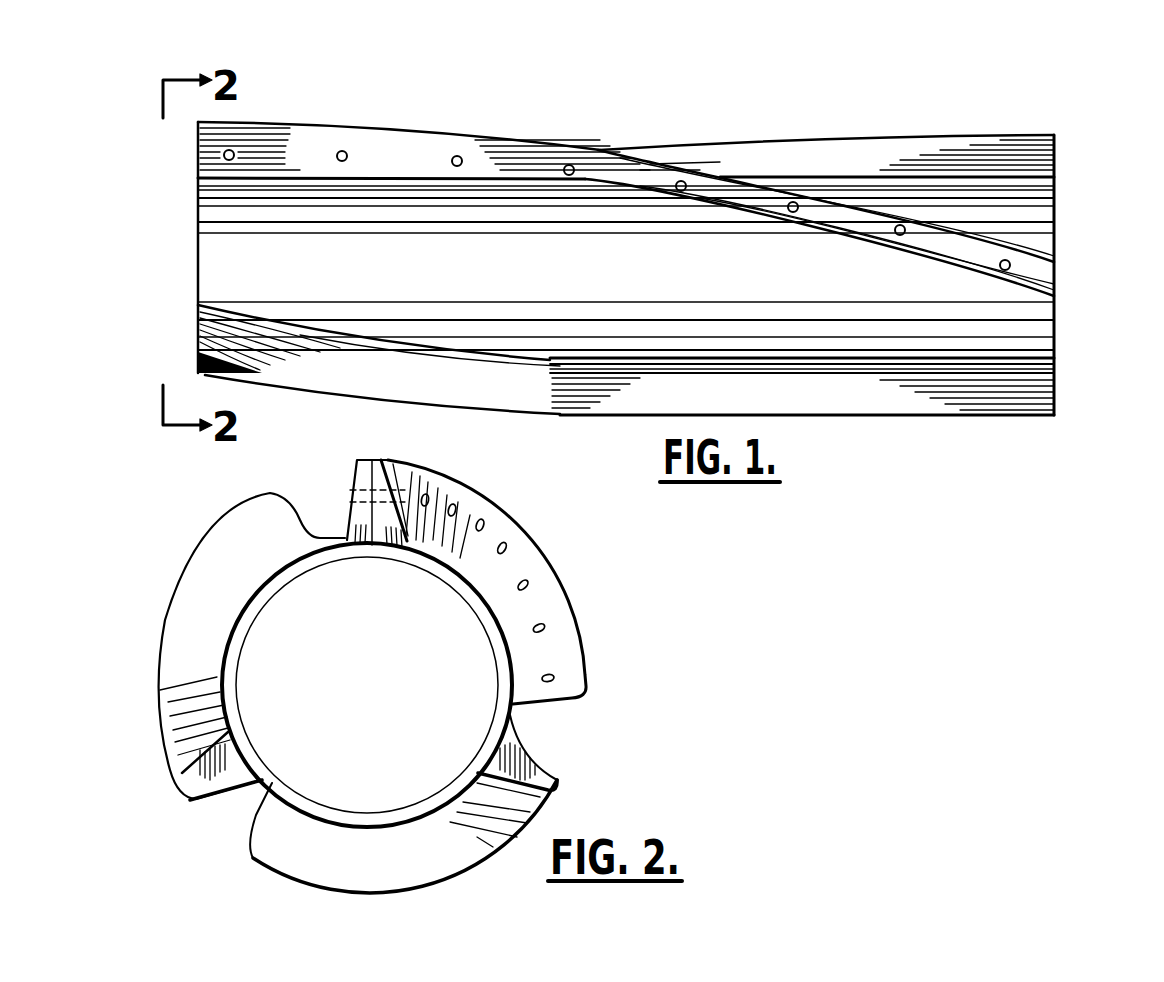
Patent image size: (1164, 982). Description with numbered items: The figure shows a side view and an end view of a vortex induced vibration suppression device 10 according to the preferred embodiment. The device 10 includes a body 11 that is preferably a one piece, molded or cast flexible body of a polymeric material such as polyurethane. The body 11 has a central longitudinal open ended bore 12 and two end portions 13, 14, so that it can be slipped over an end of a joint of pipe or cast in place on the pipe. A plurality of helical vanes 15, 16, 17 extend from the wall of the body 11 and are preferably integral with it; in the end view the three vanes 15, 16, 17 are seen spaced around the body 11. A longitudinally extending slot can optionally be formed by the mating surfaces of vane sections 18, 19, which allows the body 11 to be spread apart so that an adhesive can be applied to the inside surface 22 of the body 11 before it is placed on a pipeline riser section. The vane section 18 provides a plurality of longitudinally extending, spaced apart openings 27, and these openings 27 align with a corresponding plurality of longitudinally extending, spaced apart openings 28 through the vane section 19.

In FIG. 1, the vortex induced vibration suppression device 10 is at (623, 232).
In FIG. 1, the body 11 is at (428, 278).
In FIG. 2, the body 11 is at (262, 782).
In FIG. 2, the central longitudinal open ended bore 12 is at (293, 730).
In FIG. 1, the end portion 13 is at (197, 320).
In FIG. 1, the end portion 14 is at (1060, 345).
In FIG. 2, the helical vane 15 is at (187, 622).
In FIG. 2, the helical vane 16 is at (560, 778).
In FIG. 1, the helical vane 17 is at (373, 143).
In FIG. 2, the helical vane 17 is at (364, 460).
In FIG. 1, the vane section 18 is at (640, 150).
In FIG. 2, the vane section 18 is at (353, 482).
In FIG. 1, the vane section 19 is at (637, 178).
In FIG. 2, the vane section 19 is at (548, 583).
In FIG. 2, the inside surface 22 is at (437, 572).
In FIG. 2, the openings 27 is at (355, 499).
In FIG. 2, the openings 28 is at (423, 464).